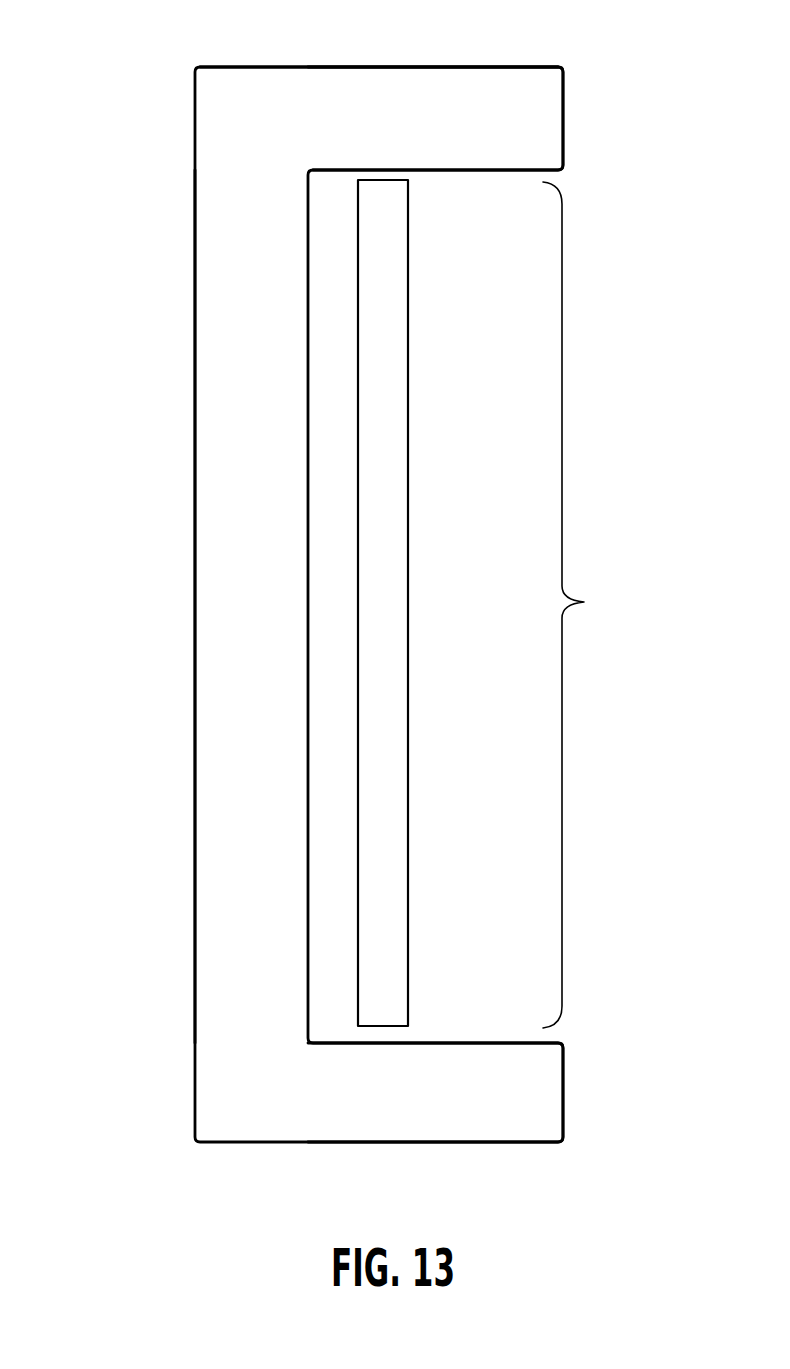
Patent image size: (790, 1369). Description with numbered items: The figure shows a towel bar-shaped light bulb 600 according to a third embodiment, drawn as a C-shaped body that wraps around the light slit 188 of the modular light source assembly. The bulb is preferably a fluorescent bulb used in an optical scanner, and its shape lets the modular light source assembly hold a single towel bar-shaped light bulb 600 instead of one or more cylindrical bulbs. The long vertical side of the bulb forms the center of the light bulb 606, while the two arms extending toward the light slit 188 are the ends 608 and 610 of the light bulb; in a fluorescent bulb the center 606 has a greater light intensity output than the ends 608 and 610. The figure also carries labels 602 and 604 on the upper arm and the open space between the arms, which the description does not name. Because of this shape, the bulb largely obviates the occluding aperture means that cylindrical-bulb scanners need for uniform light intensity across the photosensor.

The towel bar-shaped light bulb 600 is at (148, 384).
The upper arm 602 is at (551, 110).
The opening / slot 604 is at (597, 605).
The center of the light bulb 606 is at (200, 602).
The end of the light bulb 608 is at (505, 1128).
The end of the light bulb 610 is at (321, 85).
The light slit 188 is at (393, 473).